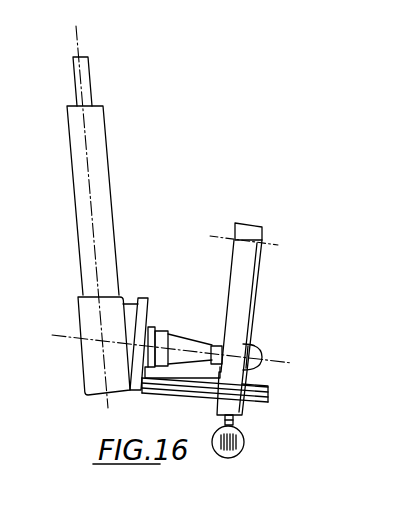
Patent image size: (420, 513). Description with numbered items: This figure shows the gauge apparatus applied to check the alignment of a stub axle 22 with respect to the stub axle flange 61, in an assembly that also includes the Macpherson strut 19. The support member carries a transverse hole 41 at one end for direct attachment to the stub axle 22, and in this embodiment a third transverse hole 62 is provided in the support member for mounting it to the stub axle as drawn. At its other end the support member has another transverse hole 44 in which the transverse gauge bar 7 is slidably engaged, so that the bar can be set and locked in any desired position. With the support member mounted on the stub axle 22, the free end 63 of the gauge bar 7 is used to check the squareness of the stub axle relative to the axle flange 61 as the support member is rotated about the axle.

The Macpherson strut 19 is at (107, 175).
The transverse hole 41 is at (232, 238).
The stub axle flange 61 is at (153, 305).
The third transverse hole 62 is at (250, 344).
The free end 63 is at (148, 400).
The stub axle 22 is at (175, 344).
The gauge bar 7 is at (186, 398).
The transverse hole 44 is at (251, 384).